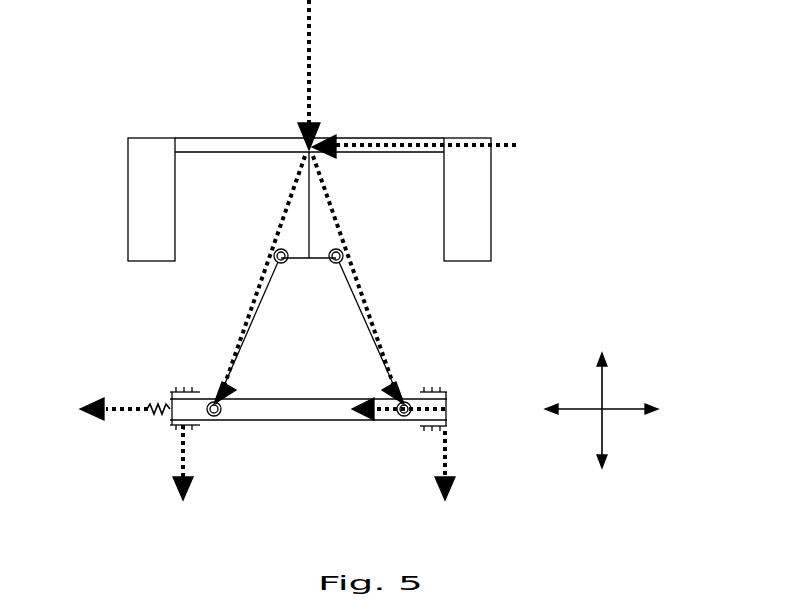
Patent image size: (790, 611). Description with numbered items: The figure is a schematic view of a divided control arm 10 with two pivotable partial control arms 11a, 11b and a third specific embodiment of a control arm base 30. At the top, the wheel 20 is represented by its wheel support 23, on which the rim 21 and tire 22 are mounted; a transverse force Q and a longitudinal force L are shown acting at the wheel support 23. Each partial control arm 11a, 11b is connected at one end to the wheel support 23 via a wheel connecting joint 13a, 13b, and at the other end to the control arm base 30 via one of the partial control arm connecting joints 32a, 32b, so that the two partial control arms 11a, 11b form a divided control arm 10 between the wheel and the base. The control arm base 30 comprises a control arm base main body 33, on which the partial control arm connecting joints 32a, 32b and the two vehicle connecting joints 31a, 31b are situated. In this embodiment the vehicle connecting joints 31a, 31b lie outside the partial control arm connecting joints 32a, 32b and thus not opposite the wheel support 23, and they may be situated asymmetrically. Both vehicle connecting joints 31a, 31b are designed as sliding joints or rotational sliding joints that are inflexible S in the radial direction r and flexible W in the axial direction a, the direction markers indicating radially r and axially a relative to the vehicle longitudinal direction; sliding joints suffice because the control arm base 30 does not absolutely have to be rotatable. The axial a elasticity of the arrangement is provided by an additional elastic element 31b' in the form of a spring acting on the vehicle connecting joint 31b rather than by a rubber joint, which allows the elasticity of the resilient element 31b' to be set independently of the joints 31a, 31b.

The divided control arm 10 is at (349, 278).
The partial control arm 11a is at (383, 343).
The partial control arm 11b is at (253, 305).
The wheel connecting joint 13a is at (345, 250).
The wheel connecting joint 13b is at (277, 240).
The wheel 20 is at (350, 152).
The rim 21 is at (185, 138).
The tire 22 is at (480, 187).
The wheel support 23 is at (330, 188).
The control arm base 30 is at (314, 419).
The radially inflexible vehicle connecting joint 31a is at (447, 407).
The axially flexible vehicle connecting joint 31b is at (151, 383).
The additional elastic element 31b' is at (146, 462).
The partial control arm connecting joint 32a is at (413, 397).
The partial control arm connecting joint 32b is at (210, 398).
The control arm base main body 33 is at (448, 417).
The transverse force Q is at (311, 22).
The longitudinal force L is at (518, 145).
The flexible W is at (110, 412).
The inflexible S is at (190, 472).
The radially to the vehicle longitudinal direction r is at (602, 370).
The axially to the vehicle longitudinal direction a is at (632, 407).